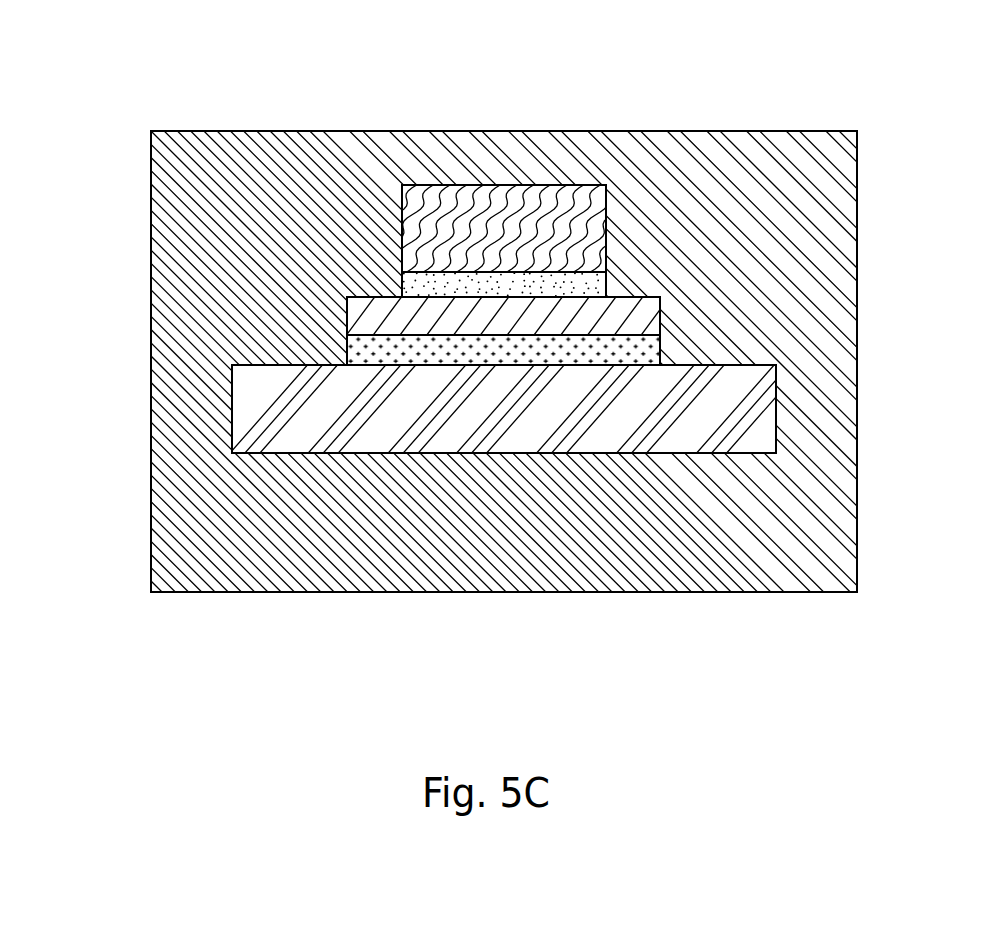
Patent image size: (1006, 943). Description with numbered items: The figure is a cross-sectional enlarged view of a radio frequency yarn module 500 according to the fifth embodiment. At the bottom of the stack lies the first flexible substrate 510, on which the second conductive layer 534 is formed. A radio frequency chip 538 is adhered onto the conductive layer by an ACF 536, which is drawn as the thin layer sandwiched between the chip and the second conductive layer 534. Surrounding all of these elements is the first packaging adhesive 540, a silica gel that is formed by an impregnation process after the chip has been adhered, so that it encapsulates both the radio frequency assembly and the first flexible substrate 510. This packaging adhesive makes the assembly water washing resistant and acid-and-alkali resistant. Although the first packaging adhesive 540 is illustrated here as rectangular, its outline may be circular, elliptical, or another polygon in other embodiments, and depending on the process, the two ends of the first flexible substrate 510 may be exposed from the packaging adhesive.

The radio frequency yarn module 500 is at (83, 53).
The first flexible substrate 510 is at (718, 408).
The second conductive layer 534 is at (630, 318).
The ACF 536 is at (575, 285).
The radio frequency chip 538 is at (575, 227).
The first packaging adhesive 540 is at (786, 511).